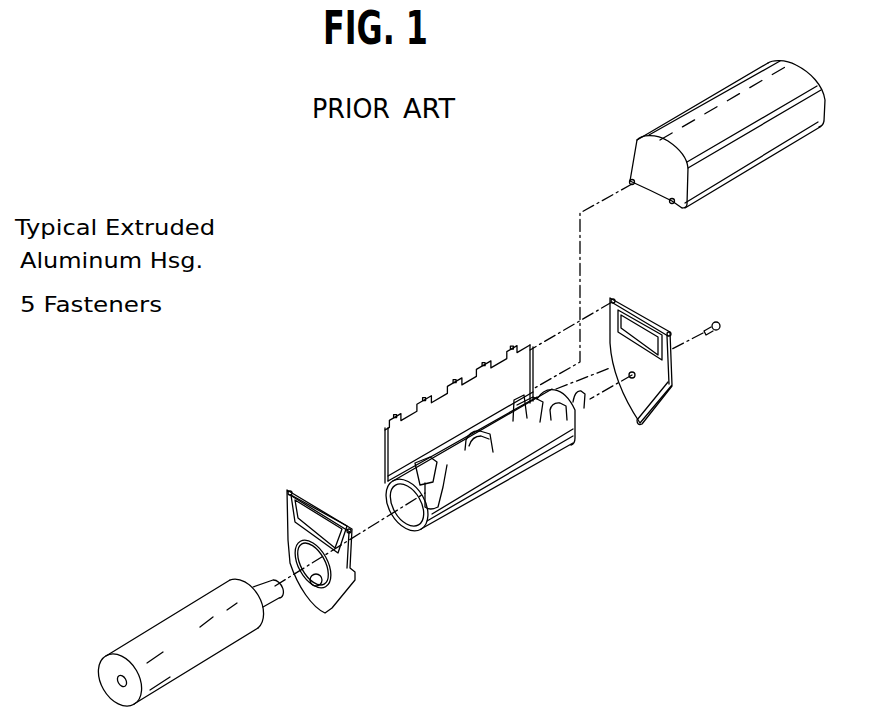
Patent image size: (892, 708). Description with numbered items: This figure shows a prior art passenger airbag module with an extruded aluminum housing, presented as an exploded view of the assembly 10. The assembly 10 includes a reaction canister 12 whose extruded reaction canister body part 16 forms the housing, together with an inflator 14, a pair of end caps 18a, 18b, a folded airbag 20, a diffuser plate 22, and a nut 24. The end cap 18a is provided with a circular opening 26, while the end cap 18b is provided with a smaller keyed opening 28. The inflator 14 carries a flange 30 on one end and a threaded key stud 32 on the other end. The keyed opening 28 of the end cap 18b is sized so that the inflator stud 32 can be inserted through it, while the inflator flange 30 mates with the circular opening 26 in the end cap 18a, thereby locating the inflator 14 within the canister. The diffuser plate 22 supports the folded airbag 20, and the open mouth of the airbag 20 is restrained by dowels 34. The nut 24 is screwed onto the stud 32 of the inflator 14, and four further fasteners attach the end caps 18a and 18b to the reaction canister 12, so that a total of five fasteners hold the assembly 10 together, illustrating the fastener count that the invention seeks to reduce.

The assembly 10 is at (434, 374).
The reaction canister 12 is at (495, 487).
The inflator 14 is at (187, 607).
The reaction canister body part 16 is at (579, 414).
The end cap 18a is at (285, 511).
The end cap 18b is at (630, 304).
The folded airbag 20 is at (660, 137).
The diffuser plate 22 is at (447, 455).
The nut 24 is at (720, 326).
The circular opening 26 is at (311, 604).
The keyed opening 28 is at (668, 392).
The flange 30 is at (113, 652).
The threaded key stud 32 is at (262, 583).
The dowels 34 is at (633, 185).